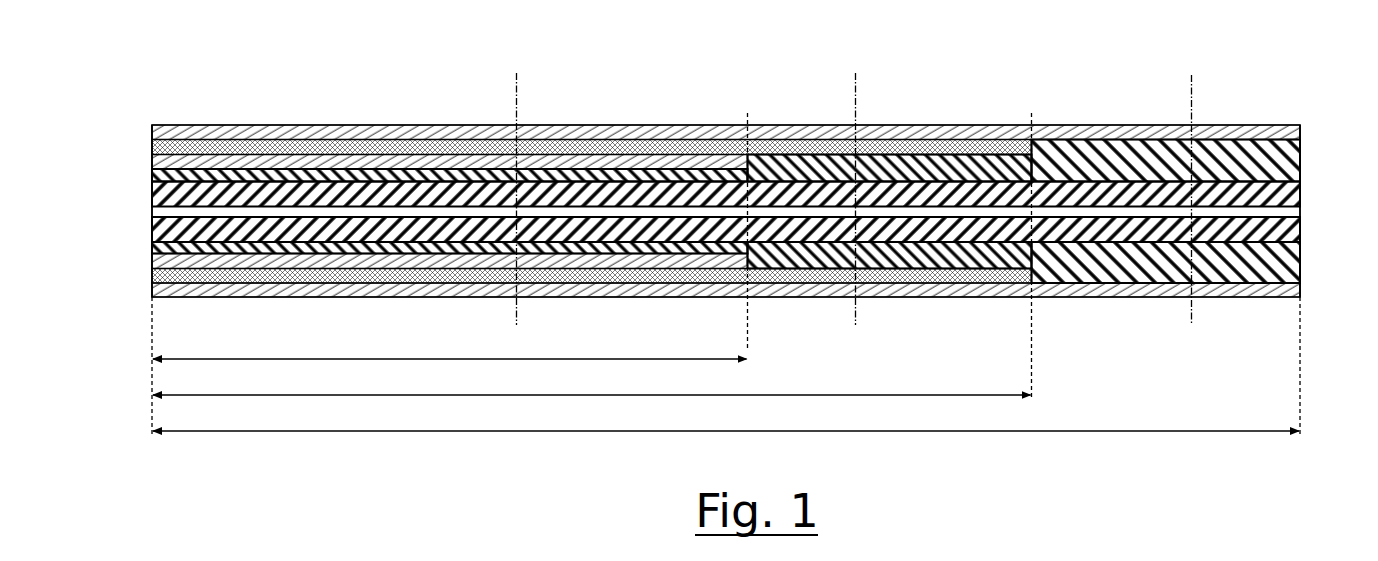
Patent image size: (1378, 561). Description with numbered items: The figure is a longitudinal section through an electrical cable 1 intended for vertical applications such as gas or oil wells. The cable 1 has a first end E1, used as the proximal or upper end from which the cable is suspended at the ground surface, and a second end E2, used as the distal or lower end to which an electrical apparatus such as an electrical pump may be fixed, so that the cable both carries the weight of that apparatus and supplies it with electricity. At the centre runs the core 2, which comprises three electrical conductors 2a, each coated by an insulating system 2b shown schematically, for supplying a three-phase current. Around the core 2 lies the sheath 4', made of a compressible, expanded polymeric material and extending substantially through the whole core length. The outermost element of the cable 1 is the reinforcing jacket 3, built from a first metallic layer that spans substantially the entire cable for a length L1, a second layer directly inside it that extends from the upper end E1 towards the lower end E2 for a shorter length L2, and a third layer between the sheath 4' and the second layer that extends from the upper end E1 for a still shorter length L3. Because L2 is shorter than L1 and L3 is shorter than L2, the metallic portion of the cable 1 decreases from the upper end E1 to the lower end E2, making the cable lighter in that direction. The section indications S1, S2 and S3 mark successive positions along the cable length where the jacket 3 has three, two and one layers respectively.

The electrical cable 1 is at (729, 170).
The core 2 is at (726, 209).
The electrical conductors 2a is at (360, 212).
The insulating system 2b is at (251, 238).
The reinforcing jacket 3 is at (726, 171).
The sheath 4' is at (1163, 180).
The section S1 is at (515, 98).
The section S2 is at (854, 98).
The section S3 is at (1190, 98).
The first end E1 is at (135, 192).
The second end E2 is at (1322, 188).
The length of the first layer L1 is at (726, 420).
The length of the second layer L2 is at (592, 384).
The length of the third layer L3 is at (450, 348).